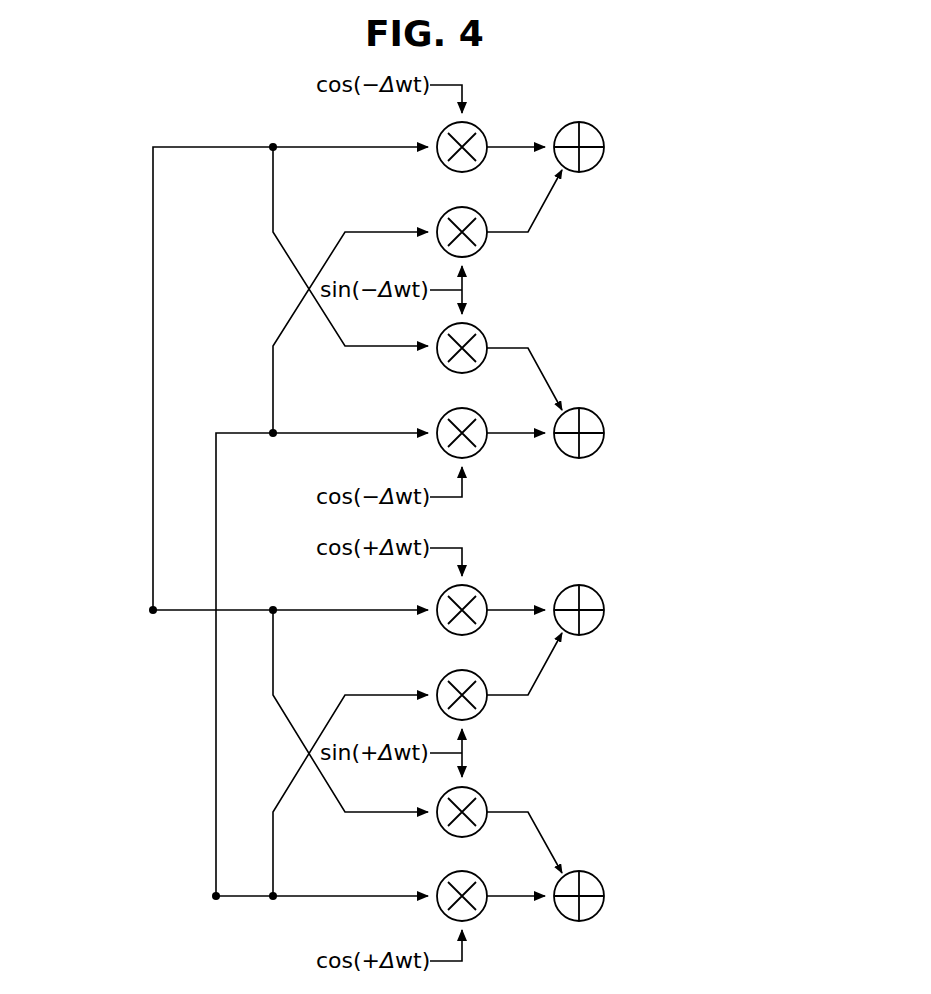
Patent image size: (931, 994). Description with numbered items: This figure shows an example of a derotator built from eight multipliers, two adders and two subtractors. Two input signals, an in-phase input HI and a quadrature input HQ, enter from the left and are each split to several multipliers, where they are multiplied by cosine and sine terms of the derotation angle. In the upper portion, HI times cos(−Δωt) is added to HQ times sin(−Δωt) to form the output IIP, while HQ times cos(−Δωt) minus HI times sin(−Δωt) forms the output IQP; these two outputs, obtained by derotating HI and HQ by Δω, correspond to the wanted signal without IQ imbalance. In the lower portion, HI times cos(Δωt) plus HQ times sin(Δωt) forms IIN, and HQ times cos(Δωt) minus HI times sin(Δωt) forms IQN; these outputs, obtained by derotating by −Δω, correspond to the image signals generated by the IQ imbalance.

The in-phase input signal HI is at (153, 610).
The quadrature input signal HQ is at (216, 896).
The in-phase wanted signal output IIP is at (604, 147).
The quadrature wanted signal output IQP is at (604, 433).
The in-phase image signal output IIN is at (604, 610).
The quadrature image signal output IQN is at (604, 896).